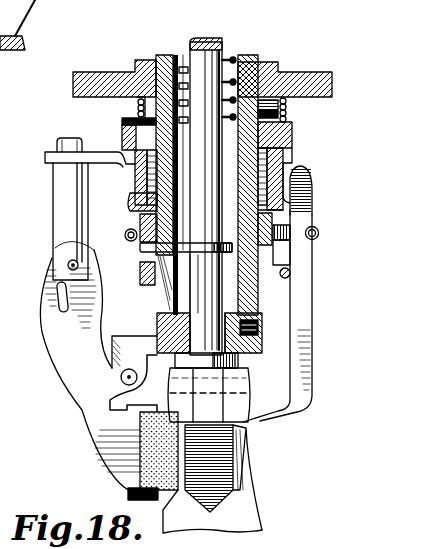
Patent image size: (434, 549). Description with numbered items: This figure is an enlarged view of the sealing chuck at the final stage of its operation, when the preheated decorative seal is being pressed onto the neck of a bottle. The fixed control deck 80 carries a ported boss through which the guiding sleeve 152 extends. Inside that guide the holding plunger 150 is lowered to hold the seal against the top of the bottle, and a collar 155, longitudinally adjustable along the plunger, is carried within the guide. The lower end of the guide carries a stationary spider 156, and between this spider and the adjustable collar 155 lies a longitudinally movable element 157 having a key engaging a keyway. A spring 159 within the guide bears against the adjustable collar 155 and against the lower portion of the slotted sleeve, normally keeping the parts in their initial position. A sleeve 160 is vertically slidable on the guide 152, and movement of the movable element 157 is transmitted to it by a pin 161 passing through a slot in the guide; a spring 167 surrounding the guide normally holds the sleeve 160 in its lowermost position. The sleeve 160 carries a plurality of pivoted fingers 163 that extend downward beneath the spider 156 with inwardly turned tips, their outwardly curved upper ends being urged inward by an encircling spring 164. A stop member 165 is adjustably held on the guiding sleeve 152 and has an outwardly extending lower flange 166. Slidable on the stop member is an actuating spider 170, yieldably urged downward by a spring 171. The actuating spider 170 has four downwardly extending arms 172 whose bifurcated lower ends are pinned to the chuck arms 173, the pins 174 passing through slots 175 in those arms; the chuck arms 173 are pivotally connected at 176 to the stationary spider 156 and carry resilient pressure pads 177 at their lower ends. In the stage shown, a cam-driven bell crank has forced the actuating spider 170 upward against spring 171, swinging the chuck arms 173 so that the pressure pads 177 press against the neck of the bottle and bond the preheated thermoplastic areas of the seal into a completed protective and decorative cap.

The control deck 80 is at (97, 72).
The guiding sleeve 152 is at (256, 55).
The spring 159 is at (233, 57).
The spring 171 is at (288, 103).
The collar 155 is at (292, 127).
The stop member 165 is at (283, 168).
The actuating spider 170 is at (122, 128).
The spring 167 is at (137, 180).
The lower flange 166 is at (130, 204).
The encircling spring 164 is at (125, 235).
The pin 161 is at (140, 252).
The arms 172 is at (55, 214).
The pins 174 is at (66, 266).
The slots 175 is at (58, 296).
The chuck arms 173 is at (50, 340).
The spider 156 is at (136, 336).
The pivot 176 is at (110, 378).
The holding plunger 150 is at (218, 322).
The movable element 157 is at (210, 262).
The sleeve 160 is at (272, 255).
The pivoted fingers 163 is at (302, 324).
The resilient pressure pads 177 is at (140, 436).